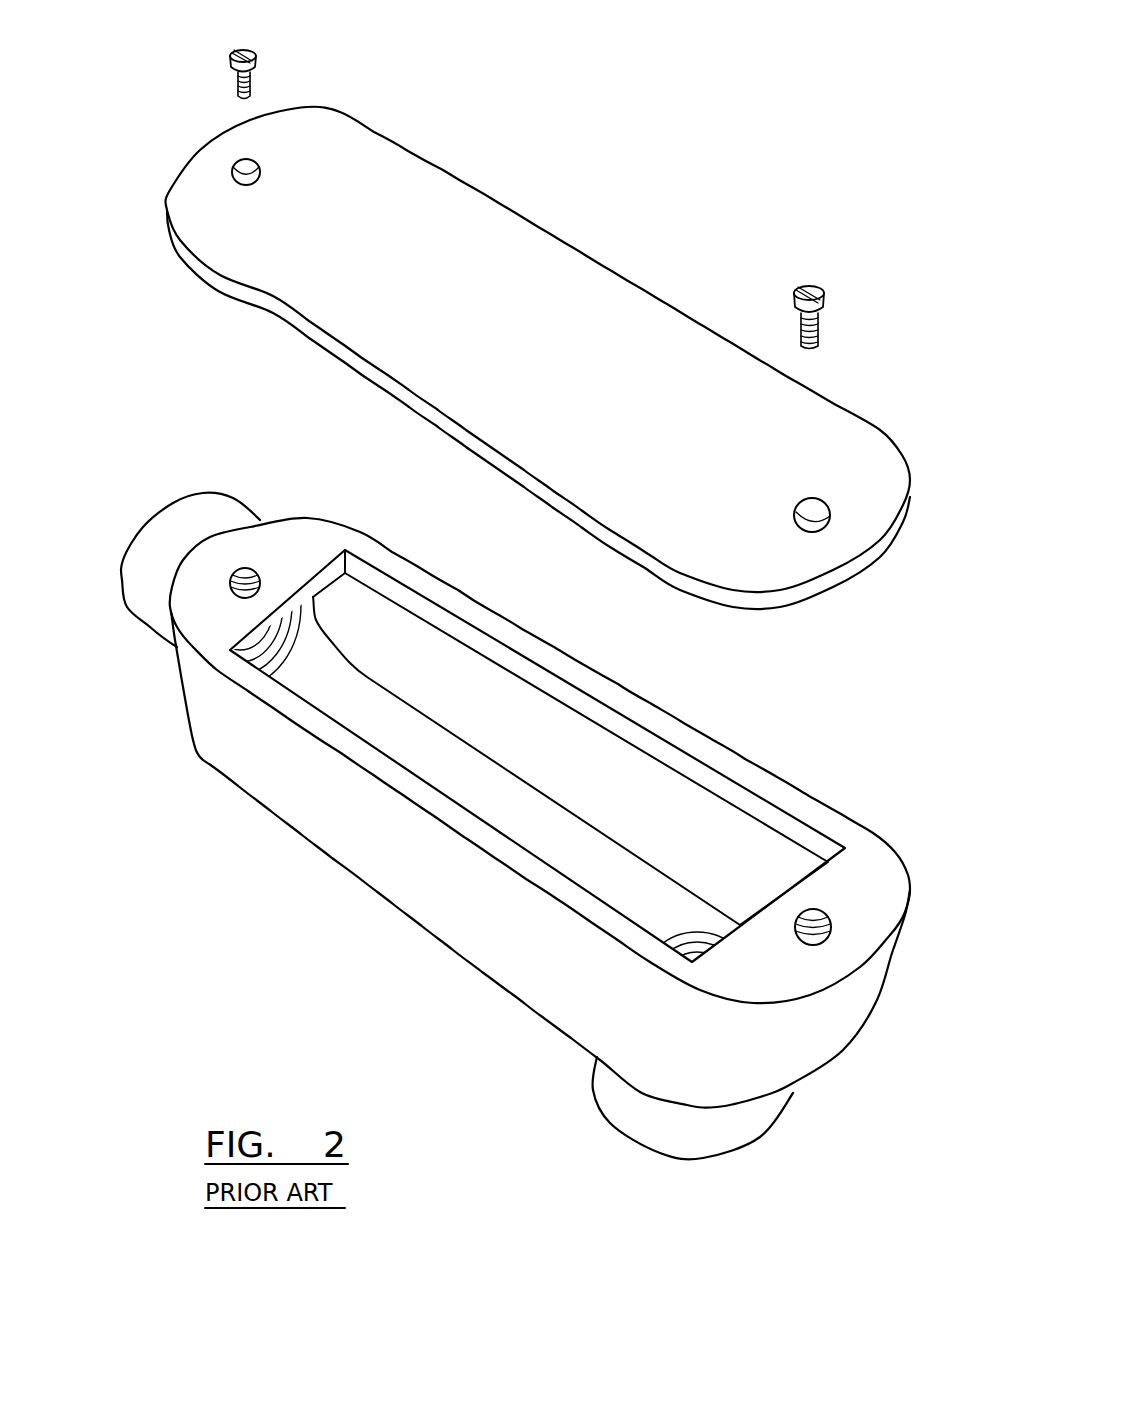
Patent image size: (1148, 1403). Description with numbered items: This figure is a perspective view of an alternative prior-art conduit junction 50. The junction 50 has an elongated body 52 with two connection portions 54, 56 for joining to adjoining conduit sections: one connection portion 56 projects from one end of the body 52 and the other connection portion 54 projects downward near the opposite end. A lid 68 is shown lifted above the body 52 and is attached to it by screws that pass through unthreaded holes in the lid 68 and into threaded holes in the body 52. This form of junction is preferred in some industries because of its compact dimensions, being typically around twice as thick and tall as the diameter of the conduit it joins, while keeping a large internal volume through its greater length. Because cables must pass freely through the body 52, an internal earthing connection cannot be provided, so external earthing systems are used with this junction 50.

The junction 50 is at (396, 926).
The body 52 is at (823, 1033).
The connection portion 54 is at (670, 1118).
The connection portion 56 is at (178, 538).
The lid 68 is at (548, 325).